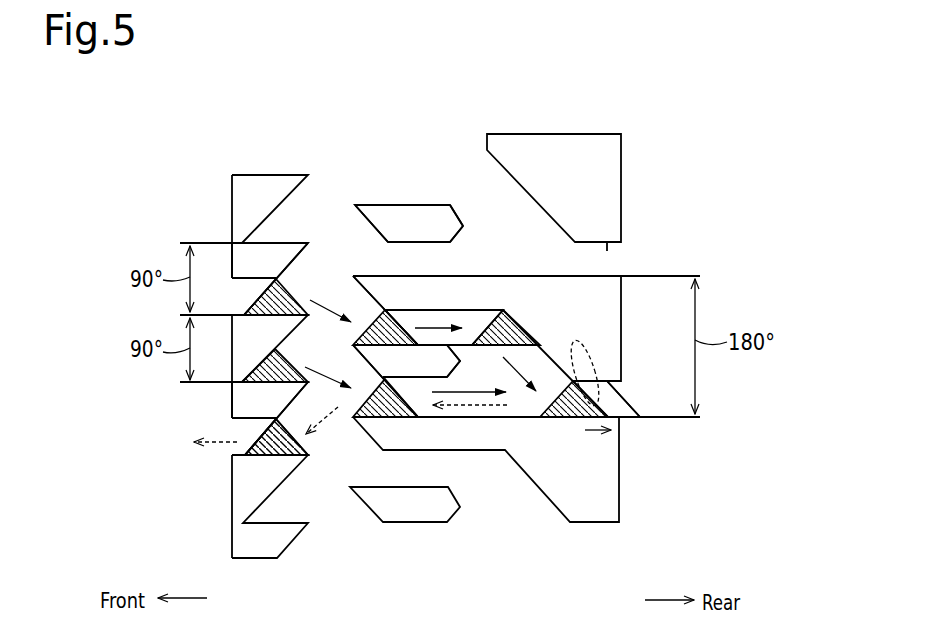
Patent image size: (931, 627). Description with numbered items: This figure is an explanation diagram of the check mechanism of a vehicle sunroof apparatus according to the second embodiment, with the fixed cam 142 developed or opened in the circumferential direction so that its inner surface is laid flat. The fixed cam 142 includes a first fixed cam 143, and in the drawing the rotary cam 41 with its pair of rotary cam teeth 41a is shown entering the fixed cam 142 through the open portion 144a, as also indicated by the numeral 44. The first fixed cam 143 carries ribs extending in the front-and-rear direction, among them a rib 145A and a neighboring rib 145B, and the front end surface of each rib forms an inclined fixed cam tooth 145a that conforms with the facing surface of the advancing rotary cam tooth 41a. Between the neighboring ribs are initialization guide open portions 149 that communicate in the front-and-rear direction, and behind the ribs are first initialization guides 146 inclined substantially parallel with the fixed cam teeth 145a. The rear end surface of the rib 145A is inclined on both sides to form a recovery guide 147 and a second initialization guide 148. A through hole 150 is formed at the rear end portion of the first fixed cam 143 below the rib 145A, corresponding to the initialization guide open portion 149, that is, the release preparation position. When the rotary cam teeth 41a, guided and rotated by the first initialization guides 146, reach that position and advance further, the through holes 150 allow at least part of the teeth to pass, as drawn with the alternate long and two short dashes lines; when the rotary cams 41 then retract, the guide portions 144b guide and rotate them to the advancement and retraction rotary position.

The fixed cam 142 is at (408, 99).
The filter 44 is at (319, 147).
The first fixed cam 143 is at (392, 151).
The open portion 144a is at (231, 294).
The guide portion 144b is at (297, 264).
The rotary cam 41 is at (242, 464).
The rotary cam tooth 41a is at (284, 284).
The rib 145A is at (400, 217).
The rib 145B is at (392, 276).
The fixed cam tooth 145a is at (356, 212).
The first initialization guide 146 is at (545, 218).
The recovery guide 147 is at (452, 207).
The second initialization guide 148 is at (463, 228).
The initialization guide open portion 149 is at (433, 302).
The through hole 150 is at (607, 243).